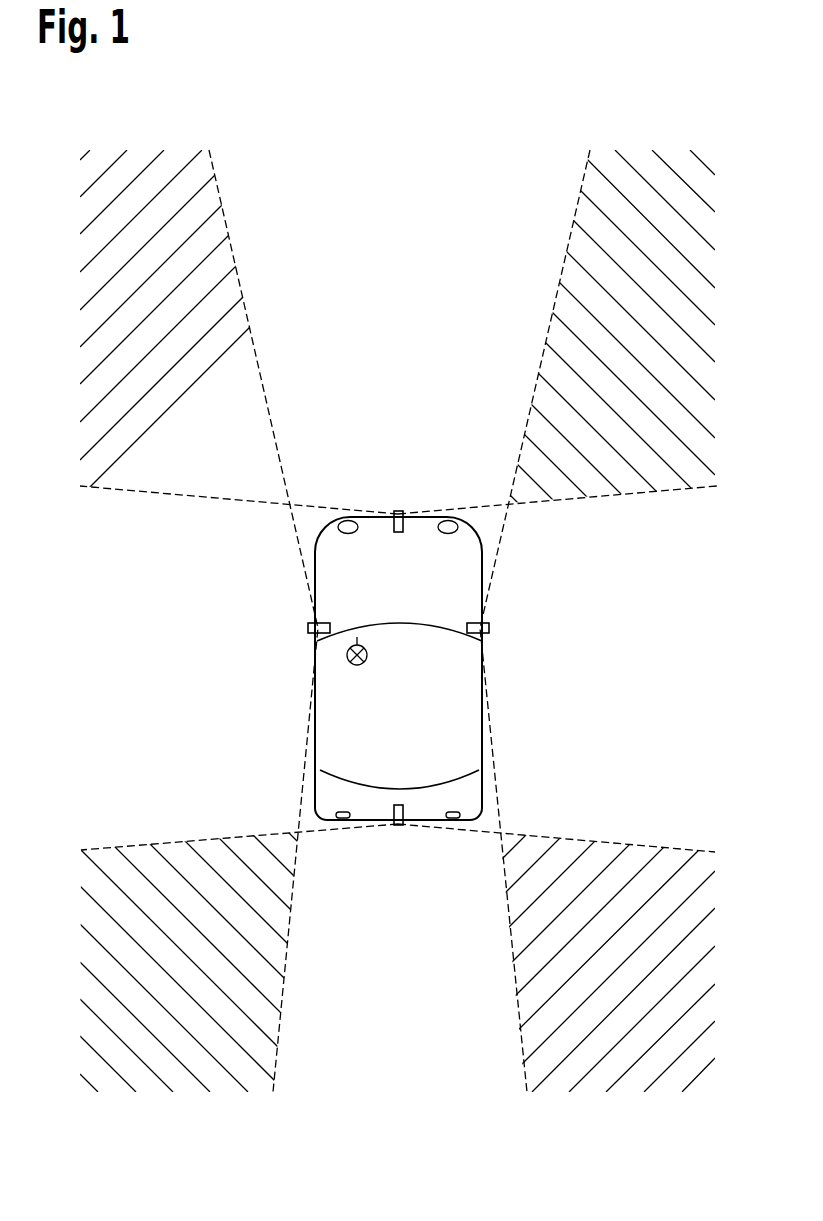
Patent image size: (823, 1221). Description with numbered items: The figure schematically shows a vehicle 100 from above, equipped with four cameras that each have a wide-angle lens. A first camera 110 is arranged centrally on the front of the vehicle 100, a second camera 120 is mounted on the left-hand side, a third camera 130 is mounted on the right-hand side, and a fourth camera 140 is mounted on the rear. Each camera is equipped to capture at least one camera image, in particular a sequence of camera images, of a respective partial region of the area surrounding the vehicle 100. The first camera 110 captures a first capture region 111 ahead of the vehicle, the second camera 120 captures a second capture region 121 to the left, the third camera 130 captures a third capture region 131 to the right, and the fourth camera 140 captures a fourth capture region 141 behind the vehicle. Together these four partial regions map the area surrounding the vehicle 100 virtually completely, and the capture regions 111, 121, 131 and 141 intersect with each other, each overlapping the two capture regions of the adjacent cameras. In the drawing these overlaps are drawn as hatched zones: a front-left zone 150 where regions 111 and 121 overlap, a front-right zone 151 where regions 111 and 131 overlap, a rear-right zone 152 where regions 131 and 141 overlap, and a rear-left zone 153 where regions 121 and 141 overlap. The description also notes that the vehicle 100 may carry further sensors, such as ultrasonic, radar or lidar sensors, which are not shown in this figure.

The vehicle 100 is at (423, 725).
The camera 110 is at (398, 511).
The first capture region 111 is at (420, 330).
The second camera 120 is at (308, 628).
The second capture region 121 is at (196, 695).
The third camera 130 is at (489, 628).
The third capture region 131 is at (649, 695).
The fourth camera 140 is at (398, 825).
The fourth capture region 141 is at (420, 985).
The front-left overlap region 150 is at (183, 330).
The front-right overlap region 151 is at (662, 330).
The rear-right overlap region 152 is at (645, 985).
The rear-left overlap region 153 is at (198, 985).